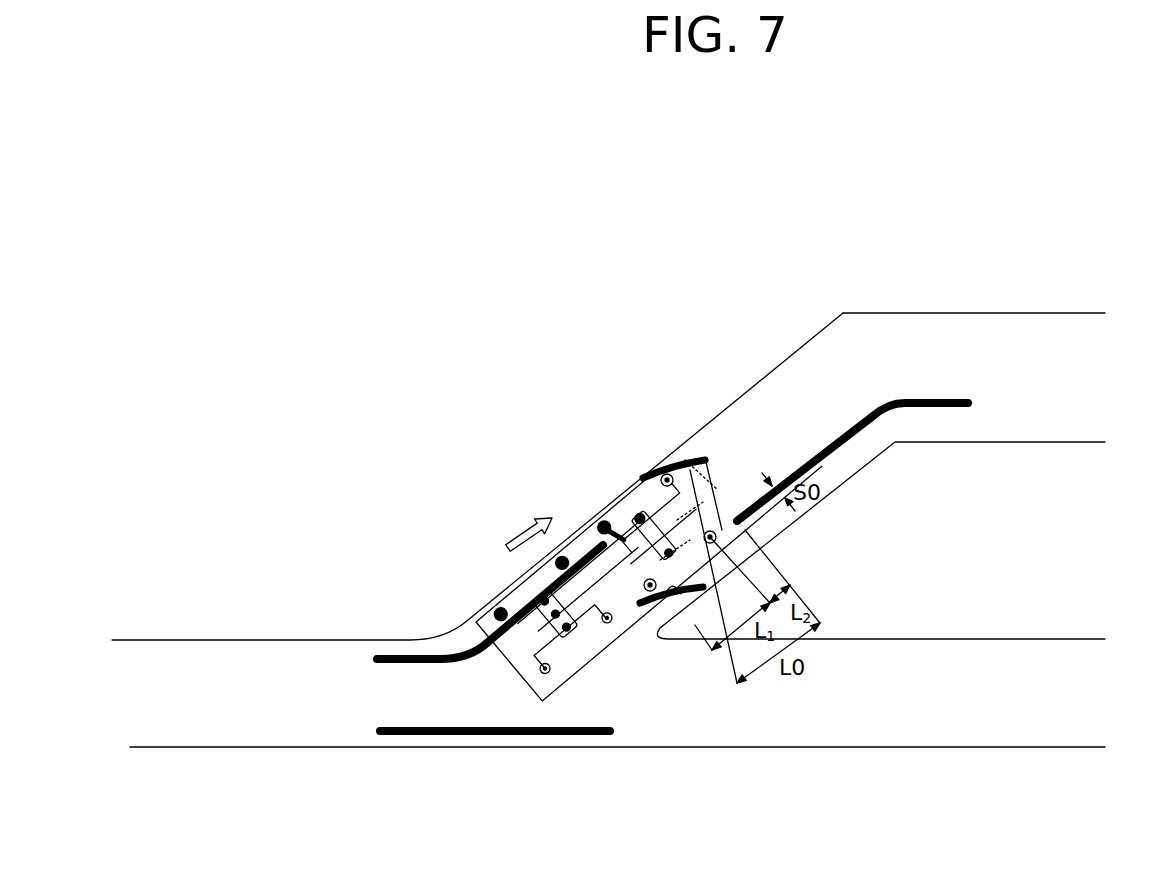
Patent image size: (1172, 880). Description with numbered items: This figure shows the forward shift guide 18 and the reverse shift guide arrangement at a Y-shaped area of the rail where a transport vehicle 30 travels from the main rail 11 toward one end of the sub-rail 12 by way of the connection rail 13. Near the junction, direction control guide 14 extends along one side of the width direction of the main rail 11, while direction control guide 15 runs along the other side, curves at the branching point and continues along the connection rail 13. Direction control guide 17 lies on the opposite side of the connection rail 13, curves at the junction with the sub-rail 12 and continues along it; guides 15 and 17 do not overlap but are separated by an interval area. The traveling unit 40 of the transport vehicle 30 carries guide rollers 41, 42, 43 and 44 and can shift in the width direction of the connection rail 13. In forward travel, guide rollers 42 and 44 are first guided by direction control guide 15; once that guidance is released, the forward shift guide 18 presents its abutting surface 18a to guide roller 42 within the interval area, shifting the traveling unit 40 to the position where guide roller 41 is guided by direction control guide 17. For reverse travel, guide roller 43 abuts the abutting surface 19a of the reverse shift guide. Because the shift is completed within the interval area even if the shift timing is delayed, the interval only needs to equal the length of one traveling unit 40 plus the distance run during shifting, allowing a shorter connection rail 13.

The main rail 11 is at (1018, 747).
The sub-rail 12 is at (1025, 313).
The connection rail 13 is at (773, 365).
The direction control guide 14 is at (425, 737).
The direction control guide 15 is at (405, 655).
The direction control guide 17 is at (873, 425).
The forward shift guide 18 is at (695, 875).
The abutting surface 18a is at (702, 468).
The abutting surface 19a is at (667, 593).
The transport vehicle 30 is at (624, 598).
The traveling unit 40 is at (649, 544).
The guide roller 41 is at (720, 537).
The guide roller 42 is at (647, 477).
The guide roller 43 is at (646, 592).
The guide roller 44 is at (489, 562).